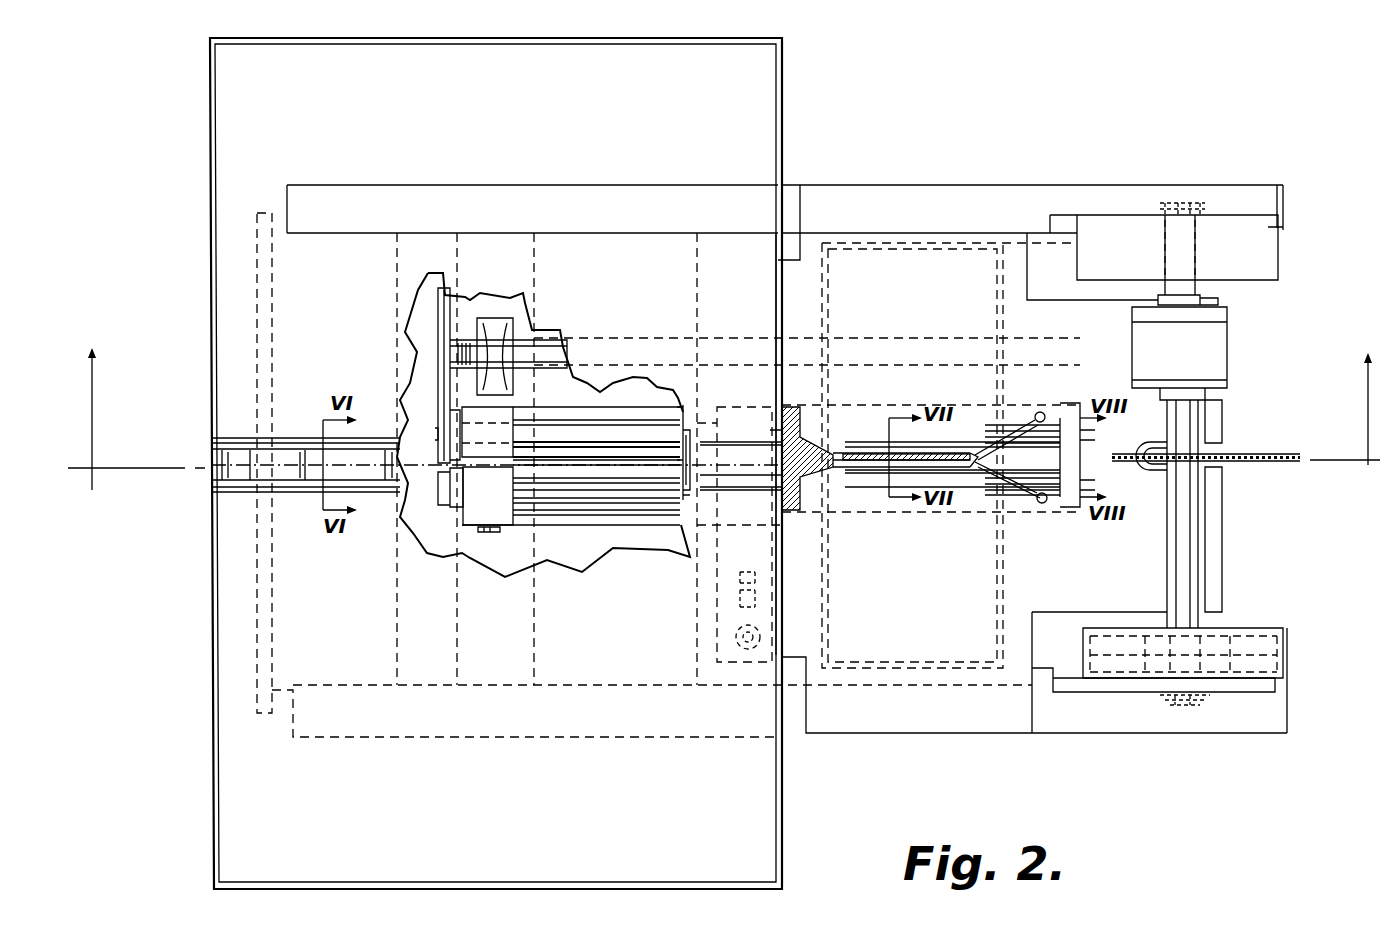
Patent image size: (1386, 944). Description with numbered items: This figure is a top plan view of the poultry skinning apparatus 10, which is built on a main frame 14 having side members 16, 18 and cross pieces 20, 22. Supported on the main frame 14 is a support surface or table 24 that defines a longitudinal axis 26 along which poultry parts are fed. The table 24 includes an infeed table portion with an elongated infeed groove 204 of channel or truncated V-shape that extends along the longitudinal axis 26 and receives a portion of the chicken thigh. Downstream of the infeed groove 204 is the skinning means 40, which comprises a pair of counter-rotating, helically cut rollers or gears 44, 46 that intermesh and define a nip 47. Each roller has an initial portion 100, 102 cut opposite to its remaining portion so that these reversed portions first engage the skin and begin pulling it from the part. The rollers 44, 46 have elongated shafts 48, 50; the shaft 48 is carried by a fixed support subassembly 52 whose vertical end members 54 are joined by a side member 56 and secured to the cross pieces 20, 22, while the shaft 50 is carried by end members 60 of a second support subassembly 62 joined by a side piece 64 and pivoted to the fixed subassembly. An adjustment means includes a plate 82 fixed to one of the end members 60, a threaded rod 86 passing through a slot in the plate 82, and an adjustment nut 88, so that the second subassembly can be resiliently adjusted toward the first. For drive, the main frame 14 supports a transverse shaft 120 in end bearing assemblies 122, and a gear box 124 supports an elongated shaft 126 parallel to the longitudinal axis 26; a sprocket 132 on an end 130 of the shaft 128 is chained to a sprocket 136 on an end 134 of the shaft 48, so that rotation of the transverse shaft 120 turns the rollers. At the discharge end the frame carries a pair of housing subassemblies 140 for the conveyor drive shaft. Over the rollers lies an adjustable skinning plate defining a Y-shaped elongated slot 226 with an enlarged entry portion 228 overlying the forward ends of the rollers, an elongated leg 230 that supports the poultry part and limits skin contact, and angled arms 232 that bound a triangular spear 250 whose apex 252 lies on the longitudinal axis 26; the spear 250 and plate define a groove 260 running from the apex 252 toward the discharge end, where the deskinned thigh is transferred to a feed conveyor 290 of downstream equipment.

The poultry skinning apparatus 10 is at (1016, 122).
The main frame 14 is at (840, 180).
The side member 16 is at (793, 190).
The side member 18 is at (796, 715).
The cross piece 20 is at (508, 268).
The cross piece 22 is at (738, 235).
The support surface or table 24 is at (232, 188).
The longitudinal axis 26 is at (122, 470).
The skinning means 40 is at (860, 470).
The roller or gear 44 is at (837, 452).
The roller or gear 46 is at (822, 478).
The nip 47 is at (840, 450).
The shaft 48 is at (643, 435).
The shaft 50 is at (530, 485).
The support subassembly 52 is at (612, 420).
The vertical end members 54 is at (497, 437).
The side member 56 is at (593, 415).
The end members 60 is at (487, 493).
The second support subassembly 62 is at (610, 505).
The side piece 64 is at (585, 520).
The plate 82 is at (777, 498).
The threaded rod 86 is at (770, 632).
The adjustment nut 88 is at (740, 627).
The initial portion 100 is at (790, 428).
The initial portion 102 is at (786, 490).
The transverse shaft 120 is at (1187, 555).
The end bearing assemblies 122 is at (1197, 217).
The gear box 124 is at (1245, 323).
The elongated shaft 126 is at (923, 342).
The shaft 128 is at (473, 270).
The end of shaft 130 is at (445, 330).
The sprocket 132 is at (440, 337).
The end of shaft 134 is at (440, 413).
The sprocket 136 is at (433, 443).
The housing subassemblies 140 is at (1247, 130).
The infeed groove 204 is at (248, 472).
The elongated slot 226 is at (868, 452).
The enlarged entry portion 228 is at (800, 408).
The elongated central portion or leg 230 is at (945, 450).
The angled portions or arms 232 is at (1020, 417).
The spear 250 is at (1043, 453).
The apex 252 is at (983, 463).
The groove 260 is at (1165, 440).
The feed conveyor 290 is at (1285, 452).